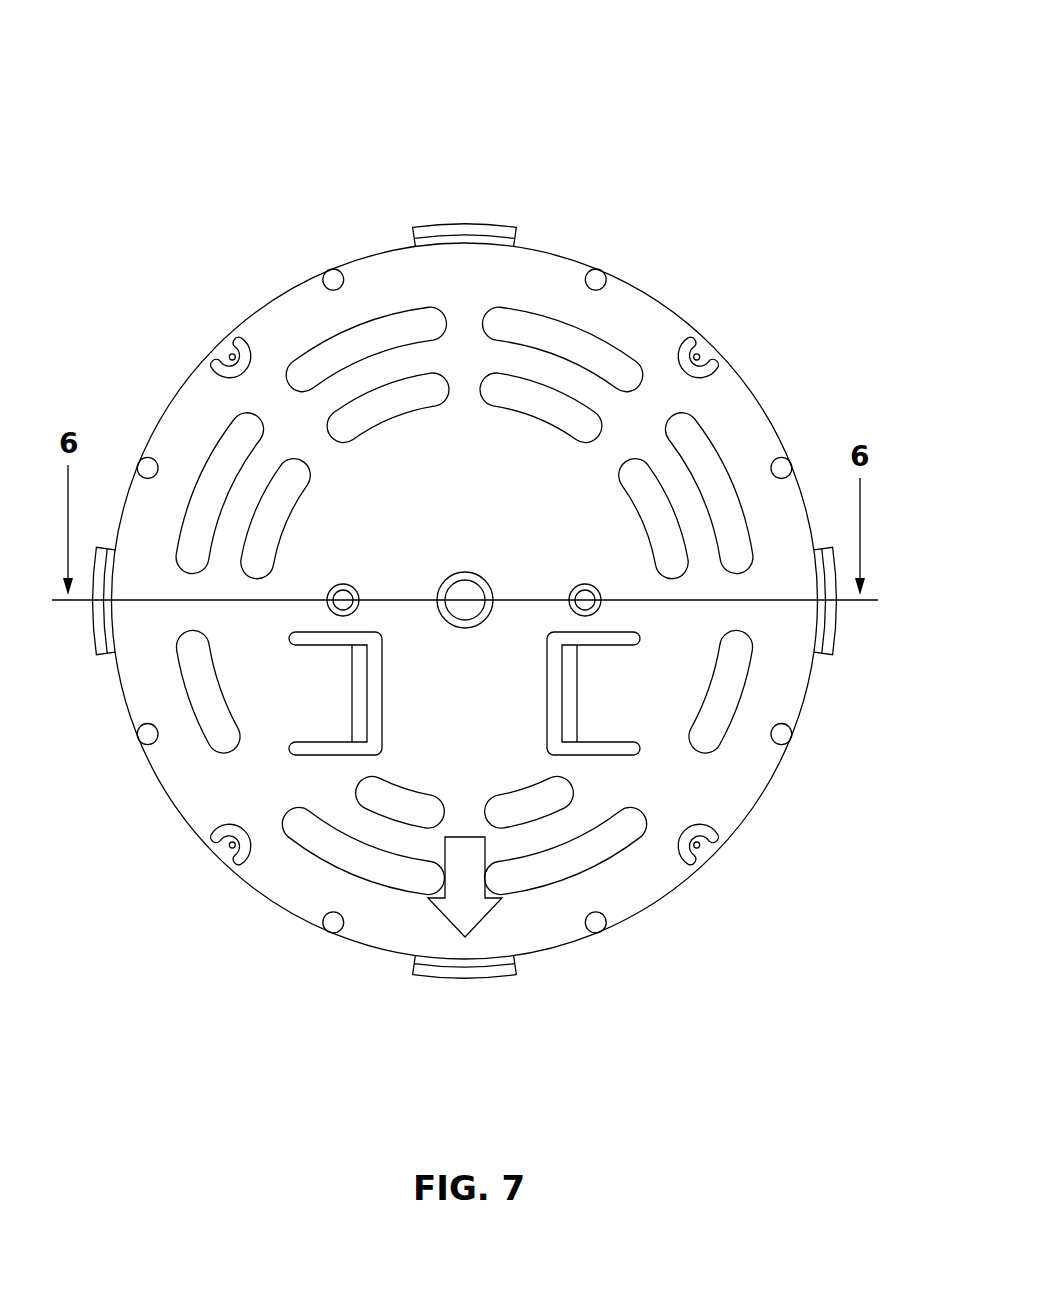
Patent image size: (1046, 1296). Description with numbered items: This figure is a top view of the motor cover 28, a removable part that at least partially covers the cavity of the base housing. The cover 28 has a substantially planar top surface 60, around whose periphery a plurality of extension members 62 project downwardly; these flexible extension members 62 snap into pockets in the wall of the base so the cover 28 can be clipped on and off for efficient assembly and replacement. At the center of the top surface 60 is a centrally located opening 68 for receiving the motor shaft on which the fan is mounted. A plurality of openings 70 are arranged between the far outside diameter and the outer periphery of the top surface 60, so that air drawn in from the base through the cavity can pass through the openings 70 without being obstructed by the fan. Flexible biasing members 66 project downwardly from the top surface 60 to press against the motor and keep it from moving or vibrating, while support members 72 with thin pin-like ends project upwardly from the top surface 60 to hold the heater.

The cover 28 is at (632, 82).
The top surface 60 is at (757, 770).
The extension members 62 is at (480, 222).
The biasing members 66 is at (546, 705).
The centrally located opening 68 is at (466, 571).
The openings 70 is at (393, 402).
The support members 72 is at (331, 930).